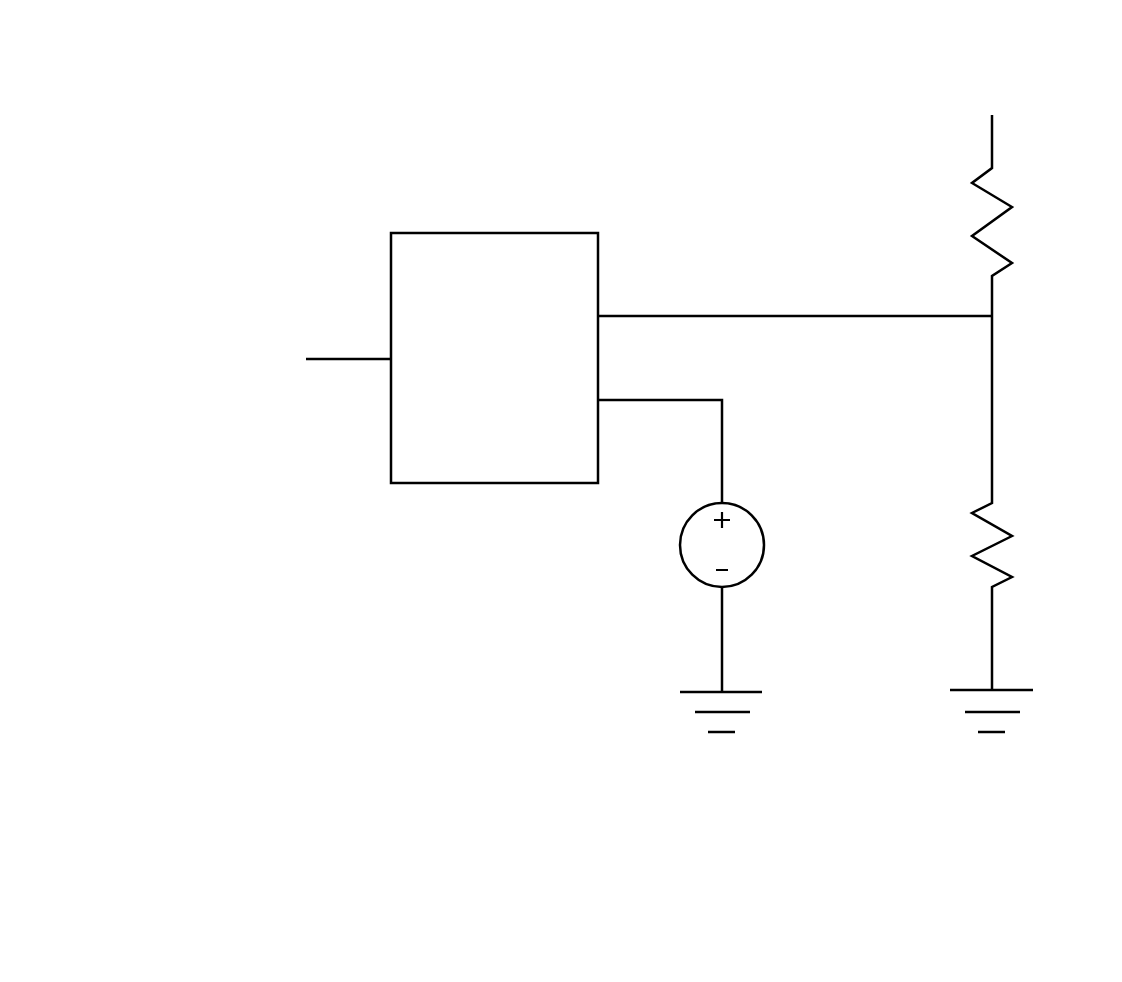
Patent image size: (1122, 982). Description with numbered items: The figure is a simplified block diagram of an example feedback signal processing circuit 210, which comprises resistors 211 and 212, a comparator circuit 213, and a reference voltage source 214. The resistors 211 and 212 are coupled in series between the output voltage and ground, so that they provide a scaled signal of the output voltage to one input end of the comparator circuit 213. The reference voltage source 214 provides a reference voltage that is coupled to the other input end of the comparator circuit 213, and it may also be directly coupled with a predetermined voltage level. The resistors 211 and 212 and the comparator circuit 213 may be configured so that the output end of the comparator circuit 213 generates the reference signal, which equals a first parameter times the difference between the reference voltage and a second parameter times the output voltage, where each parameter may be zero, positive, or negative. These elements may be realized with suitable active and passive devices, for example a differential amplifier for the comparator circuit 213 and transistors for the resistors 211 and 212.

The feedback signal processing circuit 210 is at (350, 128).
The resistor 211 is at (1035, 233).
The resistor 212 is at (1030, 547).
The comparator circuit 213 is at (598, 273).
The reference voltage source 214 is at (690, 573).